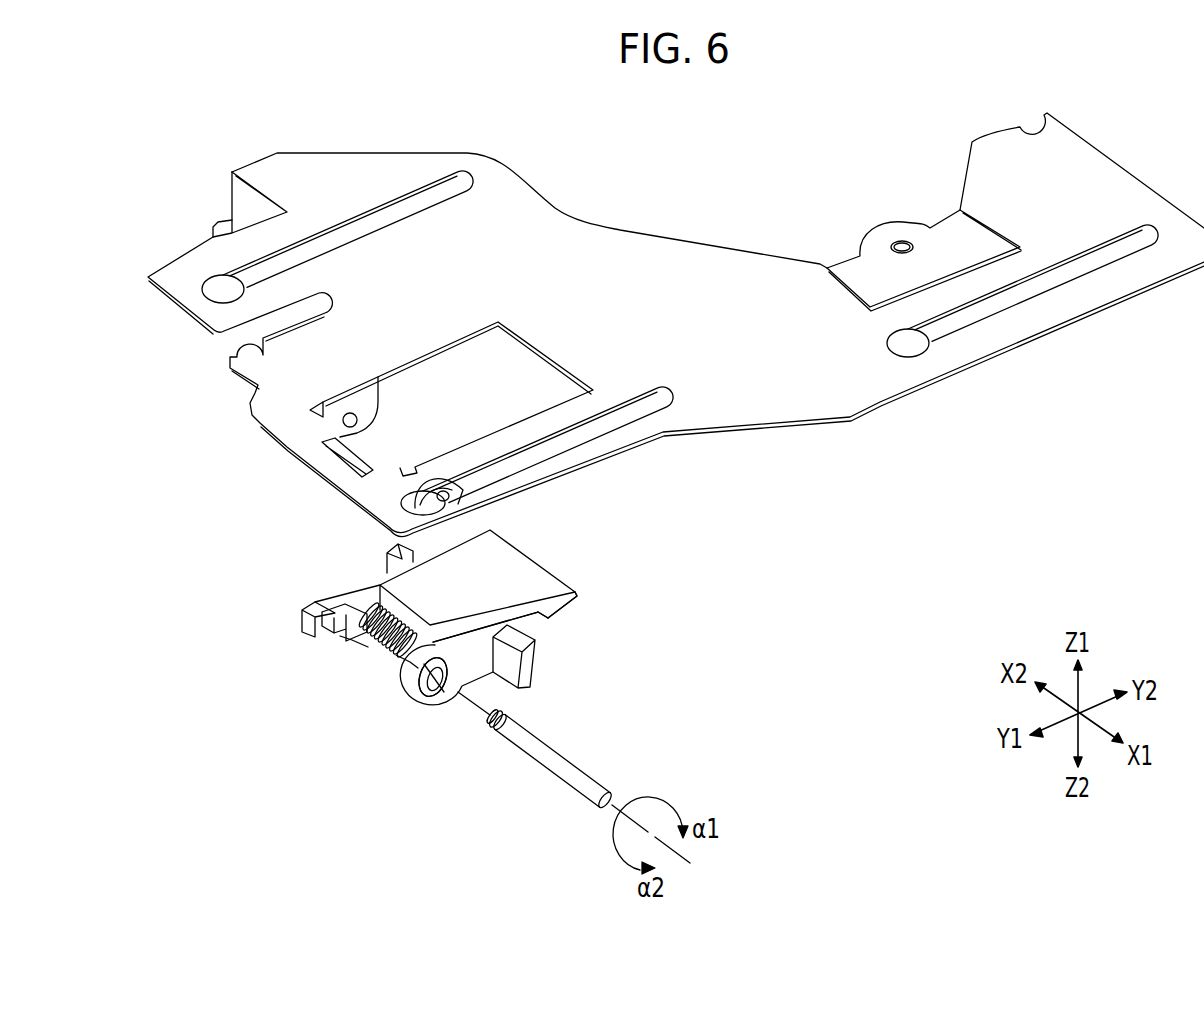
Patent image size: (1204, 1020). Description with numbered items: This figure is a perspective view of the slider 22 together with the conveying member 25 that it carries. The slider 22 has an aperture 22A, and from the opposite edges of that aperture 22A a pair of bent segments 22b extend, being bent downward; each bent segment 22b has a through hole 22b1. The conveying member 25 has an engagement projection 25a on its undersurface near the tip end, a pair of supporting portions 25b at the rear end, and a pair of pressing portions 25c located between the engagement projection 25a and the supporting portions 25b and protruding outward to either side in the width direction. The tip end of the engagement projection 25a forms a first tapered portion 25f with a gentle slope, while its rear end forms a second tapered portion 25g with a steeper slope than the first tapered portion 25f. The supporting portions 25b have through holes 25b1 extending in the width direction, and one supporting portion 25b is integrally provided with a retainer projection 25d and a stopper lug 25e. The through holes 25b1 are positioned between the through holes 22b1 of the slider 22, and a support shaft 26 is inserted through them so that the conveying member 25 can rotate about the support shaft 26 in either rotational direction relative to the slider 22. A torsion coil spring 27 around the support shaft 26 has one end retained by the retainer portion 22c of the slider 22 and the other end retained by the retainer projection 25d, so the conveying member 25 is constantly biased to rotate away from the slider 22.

The slider 22 is at (687, 250).
The aperture 22A is at (518, 367).
The bent segment 22b is at (367, 400).
The through hole 22b1 is at (343, 420).
The retainer portion 22c is at (360, 457).
The conveying member 25 is at (704, 598).
The engagement projection 25a is at (540, 617).
The supporting portion 25b is at (350, 643).
The through hole 25b1 is at (363, 617).
The pressing portion 25c is at (388, 553).
The retainer projection 25d is at (312, 622).
The stopper lug 25e is at (302, 603).
The first tapered portion 25f is at (567, 608).
The second tapered portion 25g is at (538, 620).
The support shaft 26 is at (557, 775).
The torsion coil spring 27 is at (376, 658).